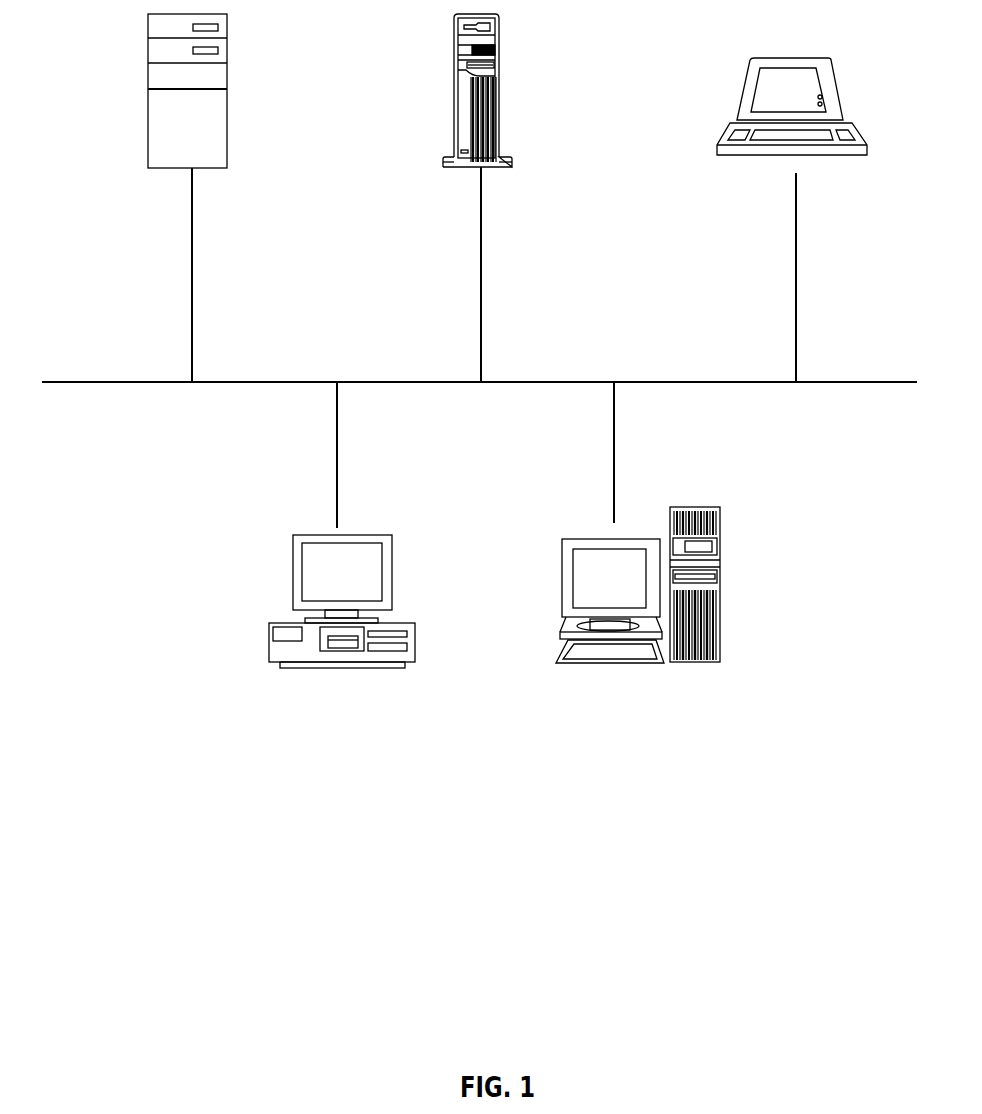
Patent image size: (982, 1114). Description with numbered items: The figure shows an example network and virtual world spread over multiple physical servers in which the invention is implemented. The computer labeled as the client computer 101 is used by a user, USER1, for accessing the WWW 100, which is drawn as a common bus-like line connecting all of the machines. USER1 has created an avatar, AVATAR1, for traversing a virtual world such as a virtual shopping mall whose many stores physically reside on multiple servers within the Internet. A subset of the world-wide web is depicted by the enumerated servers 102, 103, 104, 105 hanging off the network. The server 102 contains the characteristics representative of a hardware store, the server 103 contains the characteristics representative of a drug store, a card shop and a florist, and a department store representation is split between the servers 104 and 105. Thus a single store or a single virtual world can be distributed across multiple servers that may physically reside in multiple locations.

The WWW 100 is at (479, 364).
The client computer 101 is at (213, 198).
The server 102 is at (496, 198).
The server 103 is at (809, 220).
The server 104 is at (360, 525).
The server 105 is at (665, 522).